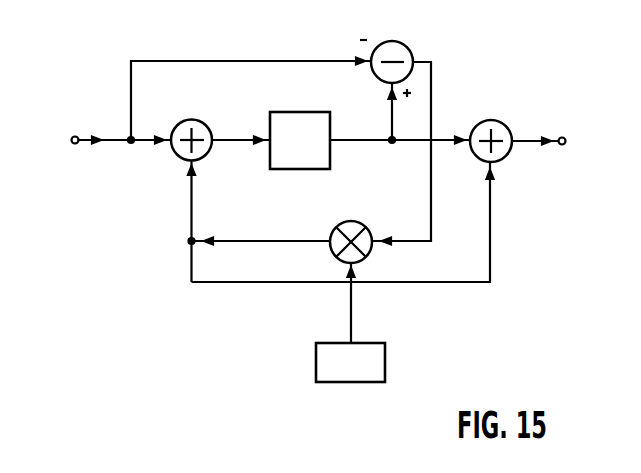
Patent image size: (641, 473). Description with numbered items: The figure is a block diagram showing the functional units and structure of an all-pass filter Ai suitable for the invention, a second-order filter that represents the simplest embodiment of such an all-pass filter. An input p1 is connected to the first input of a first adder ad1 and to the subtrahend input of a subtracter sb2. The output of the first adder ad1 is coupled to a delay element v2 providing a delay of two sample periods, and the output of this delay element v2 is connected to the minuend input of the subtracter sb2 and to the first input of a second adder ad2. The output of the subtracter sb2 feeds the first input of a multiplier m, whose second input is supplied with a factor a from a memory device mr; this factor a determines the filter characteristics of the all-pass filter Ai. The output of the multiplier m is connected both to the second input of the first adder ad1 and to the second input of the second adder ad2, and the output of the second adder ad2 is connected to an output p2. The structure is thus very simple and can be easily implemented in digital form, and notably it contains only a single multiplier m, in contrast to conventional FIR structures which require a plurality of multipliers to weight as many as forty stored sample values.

The all-pass filter Ai is at (247, 106).
The input p1 is at (72, 143).
The first adder ad1 is at (175, 155).
The delay element v2 is at (330, 165).
The subtracter sb2 is at (407, 47).
The second adder ad2 is at (491, 121).
The output p2 is at (565, 139).
The multiplier m is at (338, 227).
The factor a is at (352, 319).
The memory device mr is at (385, 368).